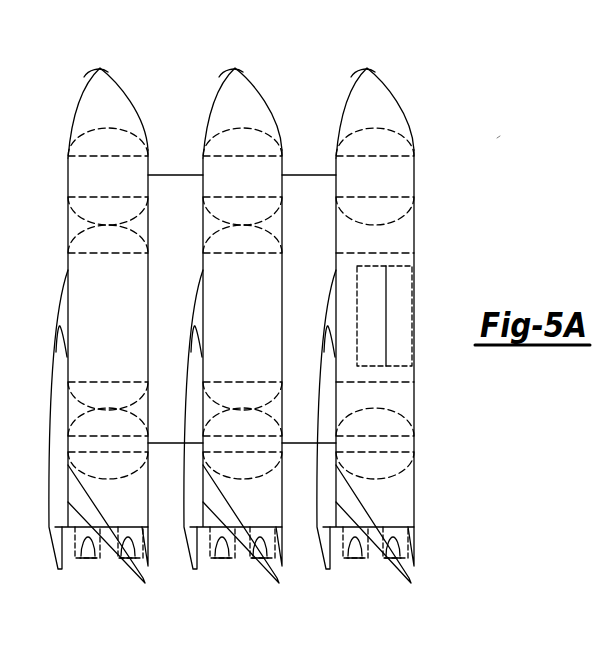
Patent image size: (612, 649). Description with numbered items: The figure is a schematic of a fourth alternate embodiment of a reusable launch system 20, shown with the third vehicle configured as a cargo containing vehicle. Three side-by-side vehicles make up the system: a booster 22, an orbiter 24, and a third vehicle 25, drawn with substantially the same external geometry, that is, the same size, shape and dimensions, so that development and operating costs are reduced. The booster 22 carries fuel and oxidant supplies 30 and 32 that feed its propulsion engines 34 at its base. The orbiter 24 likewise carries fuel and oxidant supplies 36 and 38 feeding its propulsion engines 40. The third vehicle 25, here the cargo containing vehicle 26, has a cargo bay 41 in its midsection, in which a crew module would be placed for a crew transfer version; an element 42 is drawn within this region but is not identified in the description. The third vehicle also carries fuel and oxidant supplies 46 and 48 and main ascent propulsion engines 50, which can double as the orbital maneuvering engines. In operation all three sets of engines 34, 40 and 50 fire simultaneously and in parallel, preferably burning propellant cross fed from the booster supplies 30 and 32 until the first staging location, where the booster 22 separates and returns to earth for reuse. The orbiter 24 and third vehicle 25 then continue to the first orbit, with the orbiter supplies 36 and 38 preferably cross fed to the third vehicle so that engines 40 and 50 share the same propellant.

The reusable launch system 20 is at (498, 138).
The booster 22 is at (82, 110).
The orbiter 24 is at (242, 95).
The third vehicle 25 is at (374, 98).
The cargo containing vehicle 26 is at (385, 111).
The fuel and oxidant supply 30 is at (97, 315).
The fuel and oxidant supply 32 is at (93, 173).
The propulsion engines 34 is at (82, 553).
The fuel and oxidant supply 36 is at (200, 289).
The fuel and oxidant supply 38 is at (252, 140).
The propulsion engines 40 is at (215, 552).
The cargo bay 41 is at (397, 292).
The compartment partition 42 is at (397, 322).
The fuel and oxidant supply 46 is at (385, 427).
The fuel and oxidant supply 48 is at (395, 178).
The main ascent propulsion engines 50 is at (393, 557).